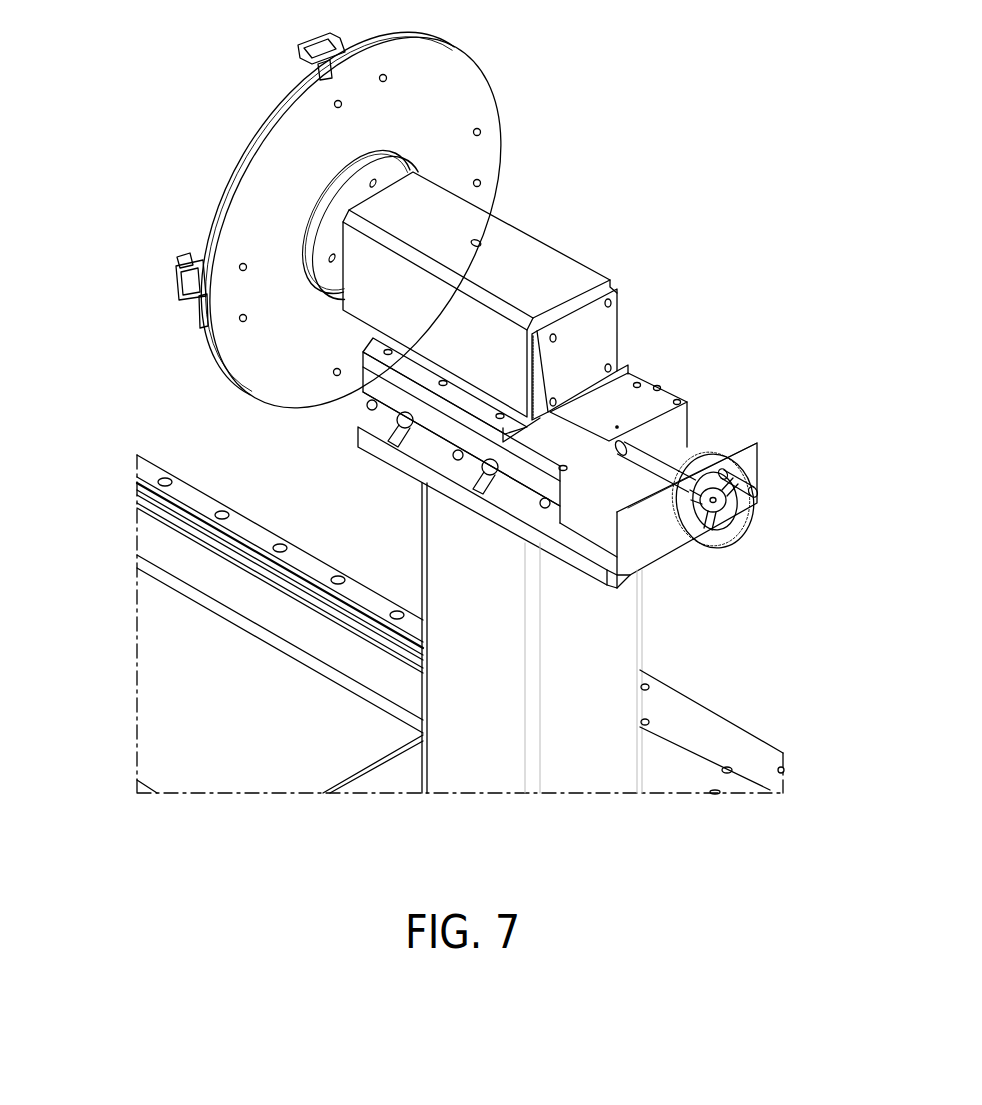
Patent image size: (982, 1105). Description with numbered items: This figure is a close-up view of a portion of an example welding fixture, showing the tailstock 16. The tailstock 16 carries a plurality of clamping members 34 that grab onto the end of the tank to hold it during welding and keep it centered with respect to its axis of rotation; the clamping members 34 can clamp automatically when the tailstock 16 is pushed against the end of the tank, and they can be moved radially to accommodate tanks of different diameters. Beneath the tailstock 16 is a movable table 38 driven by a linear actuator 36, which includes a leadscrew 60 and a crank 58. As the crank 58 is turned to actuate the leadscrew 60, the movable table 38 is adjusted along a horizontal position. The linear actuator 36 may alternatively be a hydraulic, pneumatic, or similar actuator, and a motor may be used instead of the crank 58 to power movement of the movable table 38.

The tailstock 16 is at (463, 106).
The clamping members 34 is at (178, 265).
The movable table 38 is at (628, 407).
The leadscrew 60 is at (695, 437).
The crank 58 is at (728, 533).
The linear actuator 36 is at (718, 564).